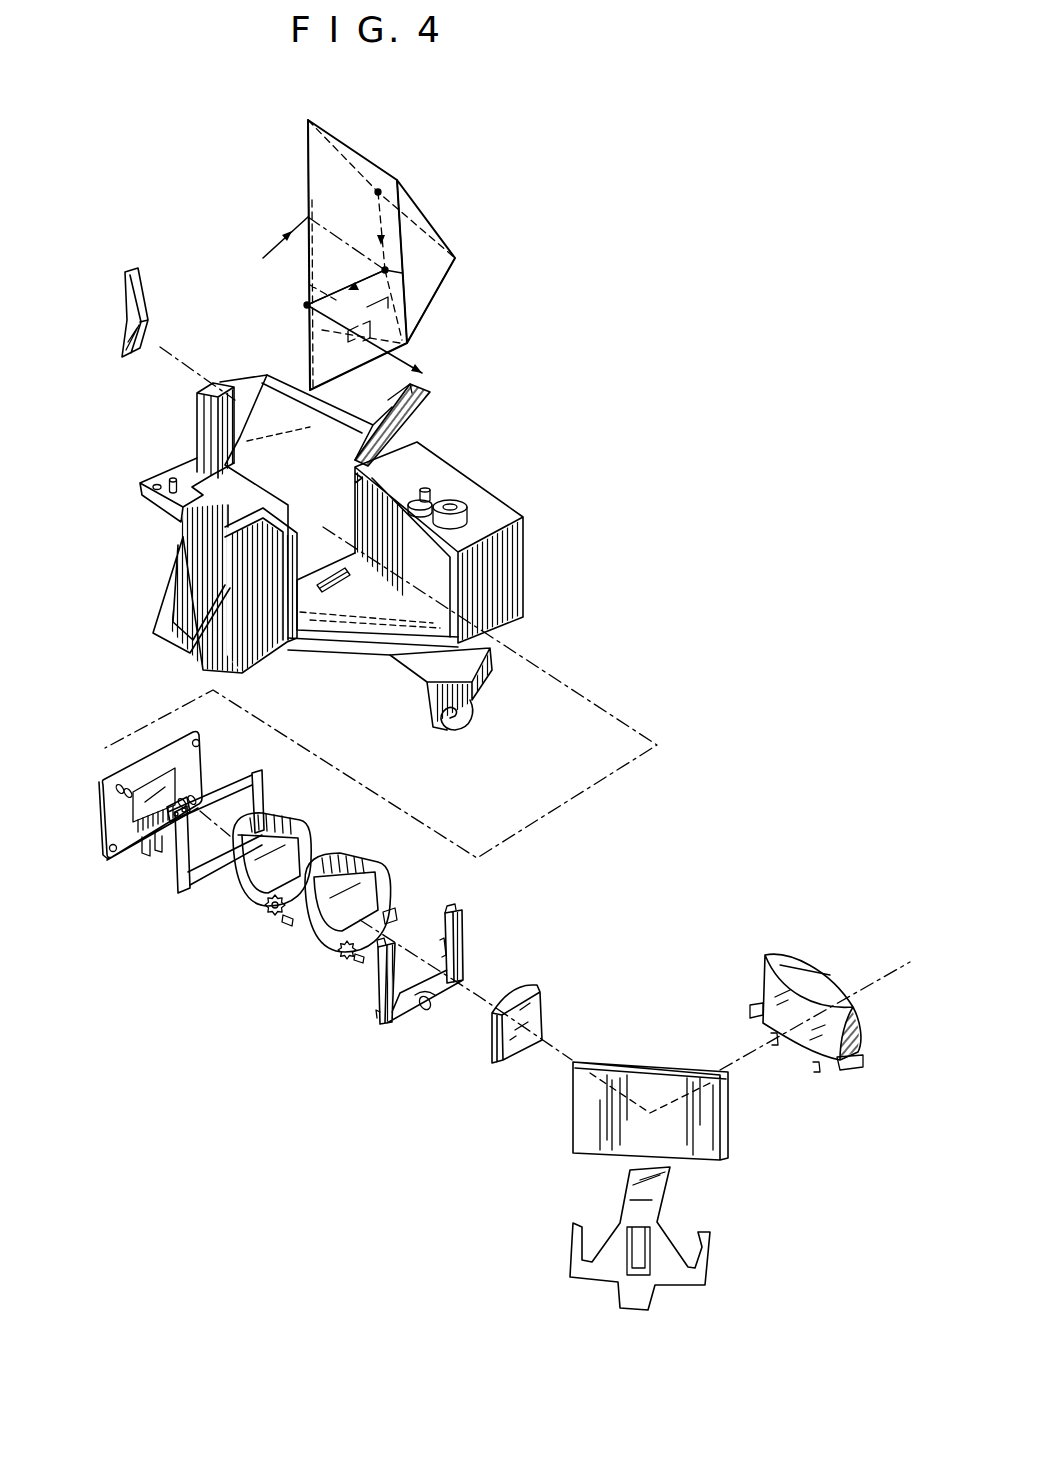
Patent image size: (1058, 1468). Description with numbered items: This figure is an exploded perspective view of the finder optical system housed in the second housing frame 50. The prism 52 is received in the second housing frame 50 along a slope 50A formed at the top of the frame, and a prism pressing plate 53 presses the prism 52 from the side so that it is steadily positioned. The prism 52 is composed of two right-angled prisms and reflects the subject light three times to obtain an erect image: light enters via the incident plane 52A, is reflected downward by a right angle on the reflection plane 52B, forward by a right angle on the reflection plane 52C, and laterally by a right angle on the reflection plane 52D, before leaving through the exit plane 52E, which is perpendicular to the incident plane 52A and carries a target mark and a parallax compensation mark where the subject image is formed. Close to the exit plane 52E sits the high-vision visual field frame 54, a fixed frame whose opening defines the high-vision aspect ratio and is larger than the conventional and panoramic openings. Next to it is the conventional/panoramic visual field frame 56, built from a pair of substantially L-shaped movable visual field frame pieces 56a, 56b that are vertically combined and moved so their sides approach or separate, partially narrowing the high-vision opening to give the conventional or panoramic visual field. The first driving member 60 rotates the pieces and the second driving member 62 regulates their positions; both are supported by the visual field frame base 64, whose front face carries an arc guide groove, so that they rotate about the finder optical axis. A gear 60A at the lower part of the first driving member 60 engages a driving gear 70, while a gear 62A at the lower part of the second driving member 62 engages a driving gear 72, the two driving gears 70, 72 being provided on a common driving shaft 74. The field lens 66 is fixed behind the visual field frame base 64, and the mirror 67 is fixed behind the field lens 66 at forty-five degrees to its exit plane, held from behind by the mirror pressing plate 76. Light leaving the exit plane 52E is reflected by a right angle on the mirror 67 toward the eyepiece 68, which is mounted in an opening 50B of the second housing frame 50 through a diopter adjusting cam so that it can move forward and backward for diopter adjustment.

The second housing frame 50 is at (356, 552).
The slope 50A is at (267, 477).
The opening 50B is at (440, 574).
The prism 52 is at (462, 275).
The incident plane 52A is at (315, 183).
The reflection plane 52B is at (378, 190).
The reflection plane 52C is at (420, 288).
The reflection plane 52D is at (305, 306).
The exit plane 52E is at (318, 355).
The prism pressing plate 53 is at (132, 270).
The high-vision (H) visual field frame 54 is at (112, 827).
The conventional/panoramic (CP) visual field frame 56 is at (201, 848).
The movable visual field frame piece 56a is at (187, 880).
The movable visual field frame piece 56b is at (292, 788).
The first driving member 60 is at (393, 891).
The gear 60A is at (384, 914).
The second driving member 62 is at (262, 893).
The gear 62A is at (248, 902).
The visual field frame base 64 is at (398, 1017).
The field lens 66 is at (515, 1050).
The mirror 67 is at (575, 1140).
The eyepiece 68 is at (782, 955).
The driving gear 70 is at (343, 958).
The driving gear 72 is at (270, 915).
The common driving shaft 74 is at (289, 925).
The mirror pressing plate 76 is at (667, 1250).